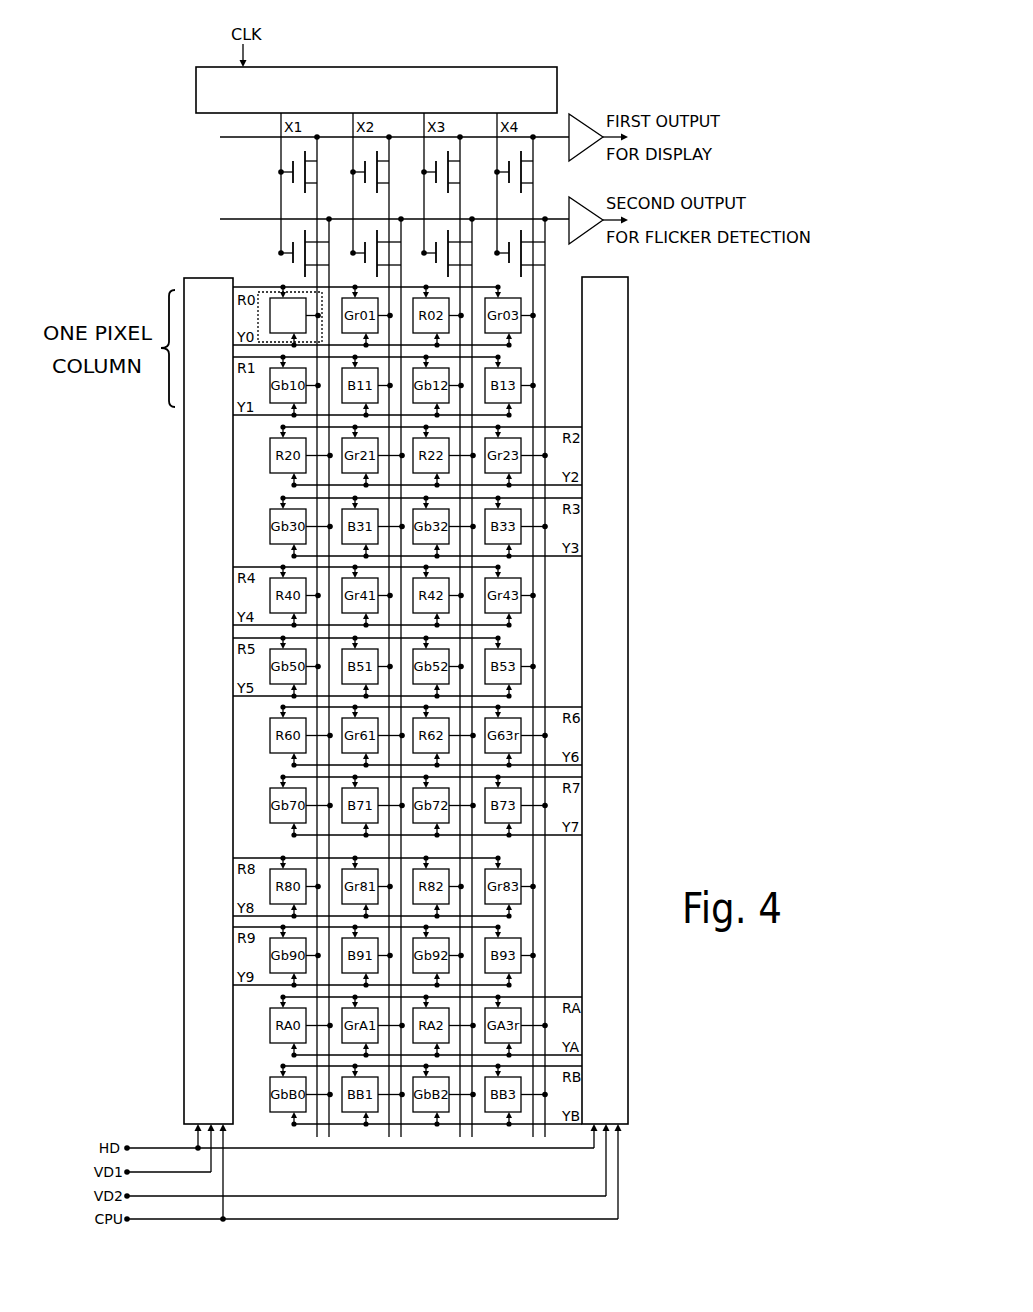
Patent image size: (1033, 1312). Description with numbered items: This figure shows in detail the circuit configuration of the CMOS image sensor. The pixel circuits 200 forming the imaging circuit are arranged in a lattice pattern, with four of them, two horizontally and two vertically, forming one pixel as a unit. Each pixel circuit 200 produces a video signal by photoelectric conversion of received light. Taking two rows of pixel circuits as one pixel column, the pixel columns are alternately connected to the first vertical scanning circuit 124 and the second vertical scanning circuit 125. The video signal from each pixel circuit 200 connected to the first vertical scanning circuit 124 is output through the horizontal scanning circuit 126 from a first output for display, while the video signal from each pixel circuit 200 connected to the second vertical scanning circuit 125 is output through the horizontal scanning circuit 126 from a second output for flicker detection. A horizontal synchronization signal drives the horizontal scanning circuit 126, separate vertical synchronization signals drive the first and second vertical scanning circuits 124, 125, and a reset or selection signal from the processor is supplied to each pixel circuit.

The first vertical scanning circuit 124 is at (184, 553).
The second vertical scanning circuit 125 is at (629, 610).
The horizontal scanning circuit 126 is at (537, 67).
The pixel circuit 200 is at (260, 292).